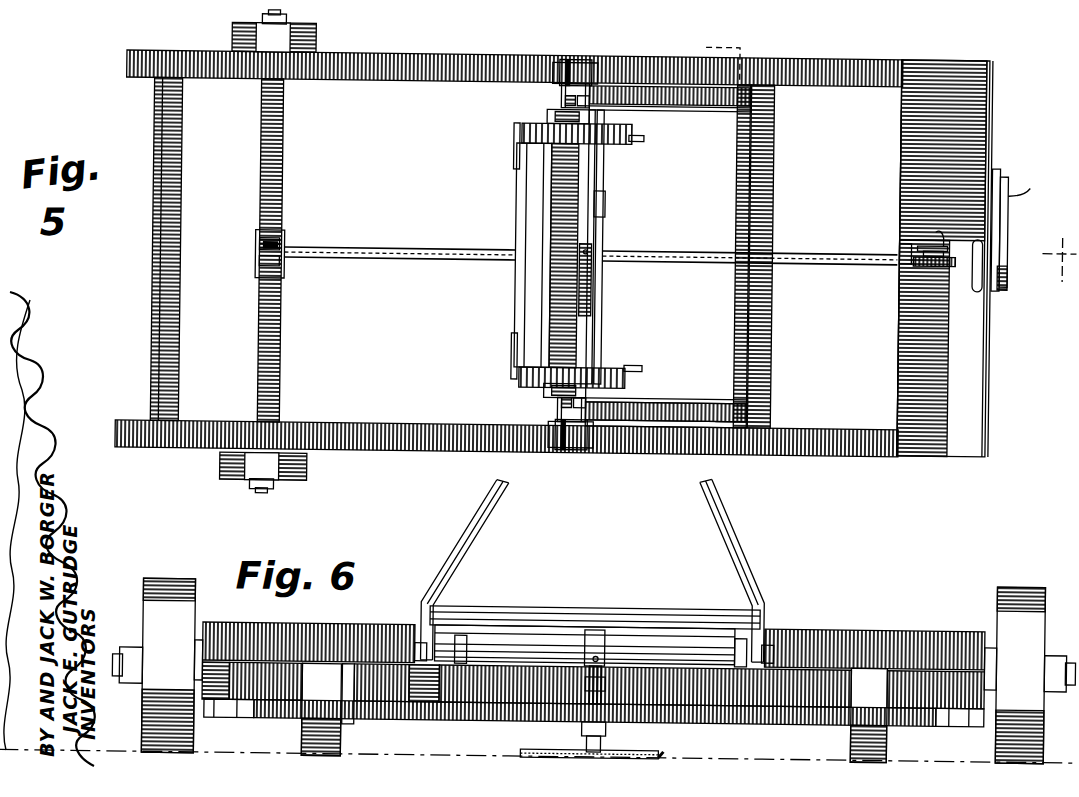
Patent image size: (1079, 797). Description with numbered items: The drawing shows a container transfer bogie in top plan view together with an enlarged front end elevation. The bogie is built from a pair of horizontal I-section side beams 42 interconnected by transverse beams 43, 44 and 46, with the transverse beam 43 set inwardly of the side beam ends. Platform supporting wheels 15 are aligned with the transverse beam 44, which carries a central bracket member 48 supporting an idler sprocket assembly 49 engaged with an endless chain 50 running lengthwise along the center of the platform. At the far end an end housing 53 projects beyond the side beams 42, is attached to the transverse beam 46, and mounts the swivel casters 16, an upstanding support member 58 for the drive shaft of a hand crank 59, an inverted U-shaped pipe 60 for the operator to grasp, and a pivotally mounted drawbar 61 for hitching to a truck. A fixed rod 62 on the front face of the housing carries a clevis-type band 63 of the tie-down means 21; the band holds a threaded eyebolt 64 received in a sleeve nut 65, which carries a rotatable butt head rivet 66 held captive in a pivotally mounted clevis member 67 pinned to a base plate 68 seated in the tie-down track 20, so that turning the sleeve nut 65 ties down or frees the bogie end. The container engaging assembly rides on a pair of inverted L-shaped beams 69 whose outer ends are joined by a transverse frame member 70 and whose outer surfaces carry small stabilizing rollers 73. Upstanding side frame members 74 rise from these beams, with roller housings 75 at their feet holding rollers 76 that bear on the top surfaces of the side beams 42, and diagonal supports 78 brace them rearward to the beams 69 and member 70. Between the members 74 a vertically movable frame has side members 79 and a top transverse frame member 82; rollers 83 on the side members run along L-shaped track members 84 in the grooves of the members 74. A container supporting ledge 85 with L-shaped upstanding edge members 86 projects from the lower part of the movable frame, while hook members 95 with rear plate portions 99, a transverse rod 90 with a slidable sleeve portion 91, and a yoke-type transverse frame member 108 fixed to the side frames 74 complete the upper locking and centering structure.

In FIG. 5, the platform supporting wheels 15 is at (312, 36).
In FIG. 6, the platform supporting wheels 15 is at (168, 578).
In FIG. 6, the swivel casters 16 is at (303, 734).
In FIG. 6, the tie-down track 20 is at (524, 746).
In FIG. 6, the tie-down means 21 is at (670, 746).
In FIG. 5, the side beams 42 is at (442, 52).
In FIG. 6, the side beams 42 is at (208, 720).
In FIG. 5, the transverse beam 43 is at (155, 272).
In FIG. 5, the transverse beam 44 is at (284, 142).
In FIG. 5, the transverse beam 46 is at (902, 364).
In FIG. 6, the transverse beam 46 is at (462, 700).
In FIG. 5, the bracket member 48 is at (258, 264).
In FIG. 5, the idler sprocket assembly 49 is at (284, 258).
In FIG. 5, the endless chain 50 is at (402, 242).
In FIG. 5, the end housing portion 53 is at (958, 54).
In FIG. 6, the end housing portion 53 is at (842, 606).
In FIG. 5, the upstanding support member 58 is at (900, 256).
In FIG. 5, the hand crank 59 is at (939, 234).
In FIG. 5, the inverted U-shaped pipe 60 is at (976, 274).
In FIG. 5, the drawbar 61 is at (1034, 230).
In FIG. 6, the drawbar 61 is at (462, 542).
In FIG. 6, the fixed rod 62 is at (646, 640).
In FIG. 6, the clevis-type band 63 is at (596, 620).
In FIG. 6, the threaded eyebolt 64 is at (604, 684).
In FIG. 6, the sleeve nut 65 is at (584, 682).
In FIG. 6, the butt head rivet 66 is at (582, 724).
In FIG. 6, the clevis member 67 is at (606, 736).
In FIG. 6, the base plate 68 is at (596, 752).
In FIG. 5, the inverted L-shaped beams 69 is at (666, 74).
In FIG. 5, the transverse frame member 70 is at (746, 212).
In FIG. 5, the small rollers 73 is at (740, 52).
In FIG. 5, the upstanding side frame members 74 is at (560, 94).
In FIG. 5, the roller housings 75 is at (568, 54).
In FIG. 5, the rollers 76 is at (554, 60).
In FIG. 5, the diagonal supports 78 is at (670, 104).
In FIG. 5, the side members 79 is at (548, 112).
In FIG. 5, the transverse frame member 82 is at (548, 194).
In FIG. 5, the rollers 83 is at (571, 88).
In FIG. 5, the track member 84 is at (582, 88).
In FIG. 5, the container supporting ledge 85 is at (524, 298).
In FIG. 5, the upstanding edge members 86 is at (516, 154).
In FIG. 5, the transverse rod 90 is at (596, 188).
In FIG. 5, the slidable sleeve portion 91 is at (601, 200).
In FIG. 5, the hook members 95 is at (636, 120).
In FIG. 5, the plate portion 99 is at (646, 138).
In FIG. 5, the yoke-type transverse frame member 108 is at (590, 296).